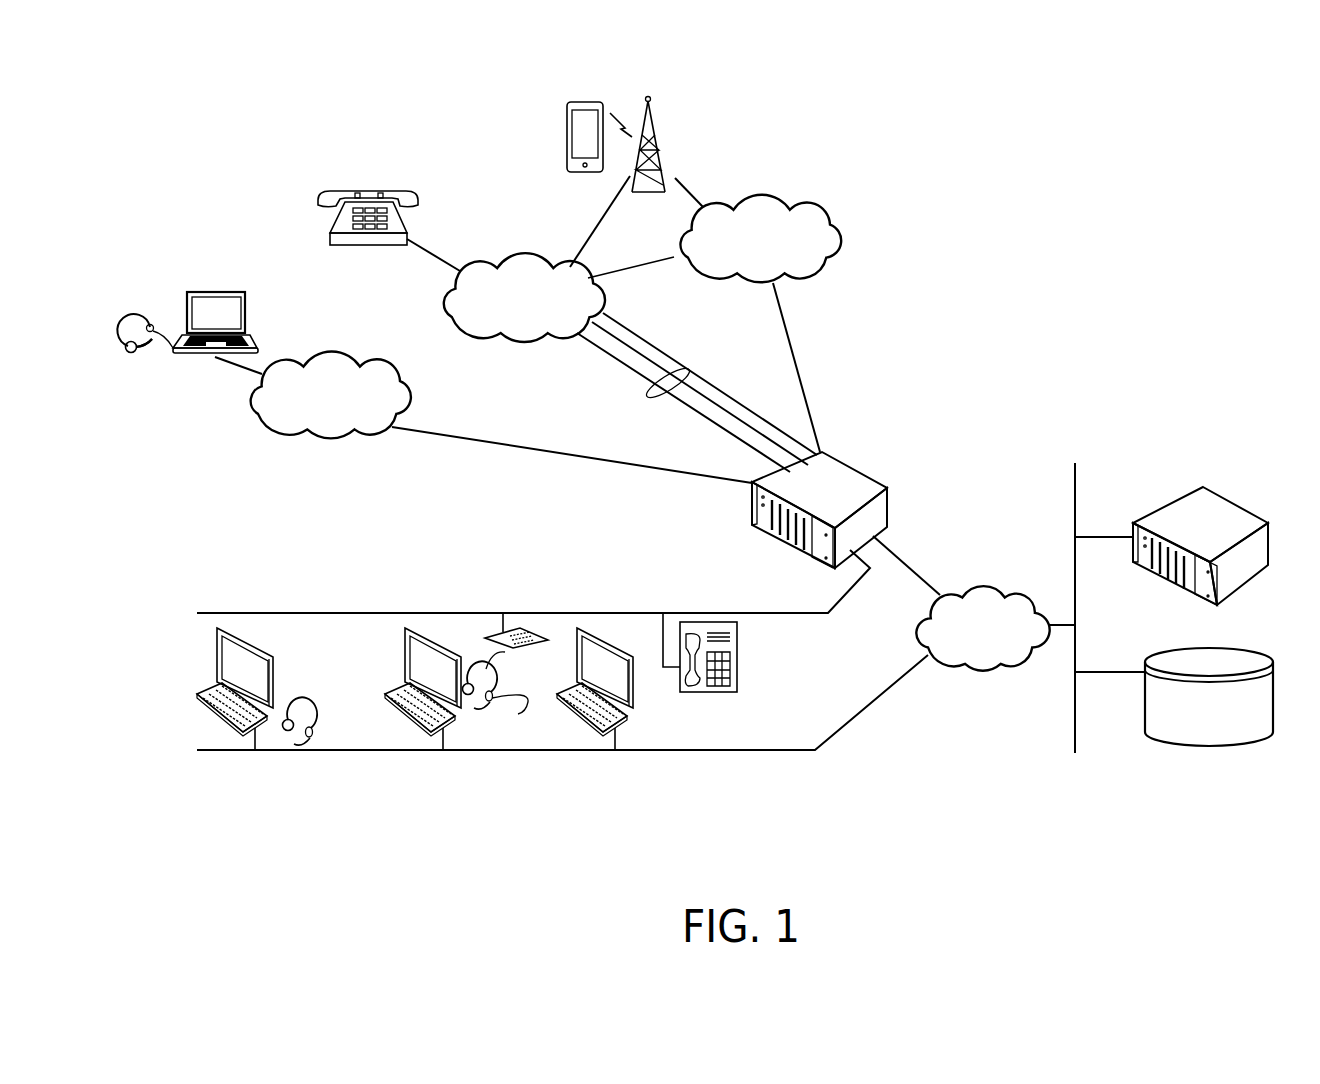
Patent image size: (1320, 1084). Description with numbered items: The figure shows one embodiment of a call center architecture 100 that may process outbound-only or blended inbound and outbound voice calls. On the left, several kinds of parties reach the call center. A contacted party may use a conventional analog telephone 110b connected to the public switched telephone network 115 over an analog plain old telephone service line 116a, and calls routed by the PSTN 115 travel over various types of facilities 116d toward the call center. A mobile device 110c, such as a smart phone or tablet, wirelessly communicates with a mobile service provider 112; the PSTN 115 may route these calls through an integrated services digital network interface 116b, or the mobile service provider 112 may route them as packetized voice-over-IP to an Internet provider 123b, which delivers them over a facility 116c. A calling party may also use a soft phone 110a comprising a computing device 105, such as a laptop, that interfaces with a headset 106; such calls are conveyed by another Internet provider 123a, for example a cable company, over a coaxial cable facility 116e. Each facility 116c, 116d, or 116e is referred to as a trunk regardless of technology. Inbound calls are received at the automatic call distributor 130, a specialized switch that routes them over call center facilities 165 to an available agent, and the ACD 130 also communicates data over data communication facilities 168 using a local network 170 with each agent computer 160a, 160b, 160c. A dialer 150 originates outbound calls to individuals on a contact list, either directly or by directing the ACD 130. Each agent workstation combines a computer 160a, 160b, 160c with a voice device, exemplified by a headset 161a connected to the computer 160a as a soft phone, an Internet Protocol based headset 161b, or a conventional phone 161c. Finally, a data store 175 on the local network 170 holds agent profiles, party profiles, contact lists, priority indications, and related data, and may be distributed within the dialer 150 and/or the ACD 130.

The call center architecture 100 is at (995, 176).
The computing device 105 is at (186, 321).
The headset 106 is at (129, 353).
The soft phone 110a is at (219, 270).
The conventional analog telephone 110b is at (408, 233).
The mobile device 110c is at (563, 141).
The mobile service provider 112 is at (660, 158).
The public switched telephone network 115 is at (524, 297).
The analog plain old telephone service line 116a is at (441, 260).
The integrated services digital network interface 116b is at (607, 205).
The facility 116c is at (795, 364).
The facilities 116d is at (655, 390).
The coaxial cable facility 116e is at (512, 418).
The Internet provider 123a is at (331, 395).
The Internet provider 123b is at (760, 239).
The automatic call distributor 130 is at (819, 510).
The dialer 150 is at (1200, 546).
The computer 160a is at (298, 649).
The computer 160b is at (431, 687).
The computer 160c is at (604, 687).
The headset 161a is at (338, 705).
The IP based headset 161b is at (519, 700).
The conventional phone 161c is at (718, 696).
The call center facilities 165 is at (772, 613).
The data communication facilities 168 is at (778, 752).
The local network 170 is at (922, 648).
The data store 175 is at (1209, 697).